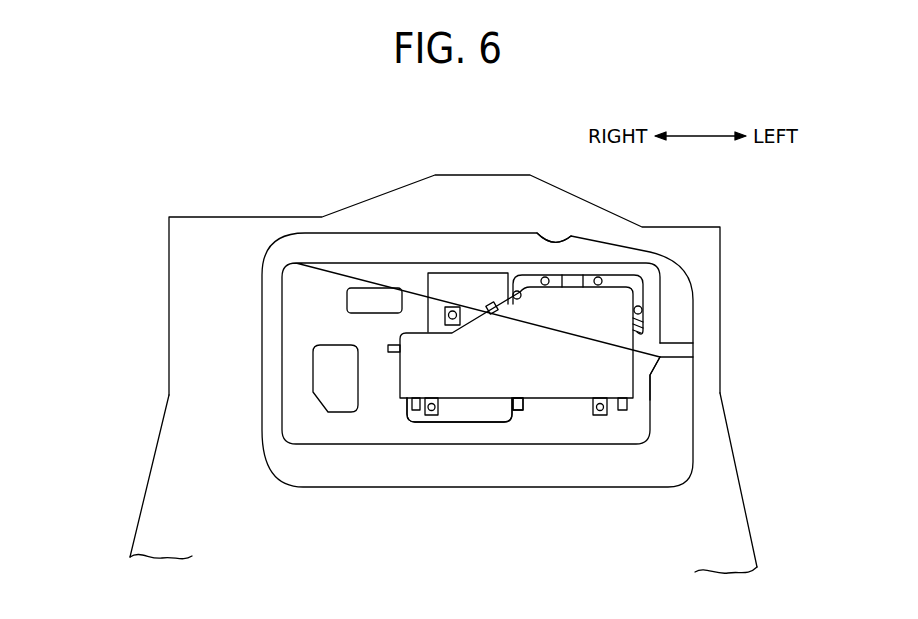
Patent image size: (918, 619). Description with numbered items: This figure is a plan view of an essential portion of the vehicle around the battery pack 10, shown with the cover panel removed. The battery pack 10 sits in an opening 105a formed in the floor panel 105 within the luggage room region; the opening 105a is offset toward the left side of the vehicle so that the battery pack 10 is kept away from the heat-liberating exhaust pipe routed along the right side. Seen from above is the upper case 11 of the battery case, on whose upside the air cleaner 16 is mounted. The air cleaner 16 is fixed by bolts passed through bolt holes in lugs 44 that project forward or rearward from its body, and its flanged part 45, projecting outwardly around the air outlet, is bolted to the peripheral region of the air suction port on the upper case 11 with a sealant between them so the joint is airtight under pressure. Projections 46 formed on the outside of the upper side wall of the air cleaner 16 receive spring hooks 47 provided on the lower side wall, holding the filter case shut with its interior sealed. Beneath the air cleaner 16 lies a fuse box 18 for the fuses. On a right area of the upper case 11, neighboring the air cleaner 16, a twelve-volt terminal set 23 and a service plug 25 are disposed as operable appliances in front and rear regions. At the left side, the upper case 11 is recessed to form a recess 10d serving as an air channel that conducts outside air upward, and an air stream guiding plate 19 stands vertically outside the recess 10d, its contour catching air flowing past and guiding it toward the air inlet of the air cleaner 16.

The battery pack 10 is at (412, 277).
The recess 10d is at (657, 368).
The upper case 11 is at (380, 430).
The air cleaner 16 is at (563, 358).
The fuse box 18 is at (469, 282).
The air stream guiding plate 19 is at (677, 360).
The 12-volt terminal set 23 is at (338, 400).
The service plug 25 is at (373, 291).
The lugs 44 is at (600, 415).
The flanged part 45 is at (637, 298).
The projections 46 is at (520, 410).
The spring hooks 47 is at (465, 410).
The floor panel 105 is at (493, 533).
The opening 105a is at (573, 233).